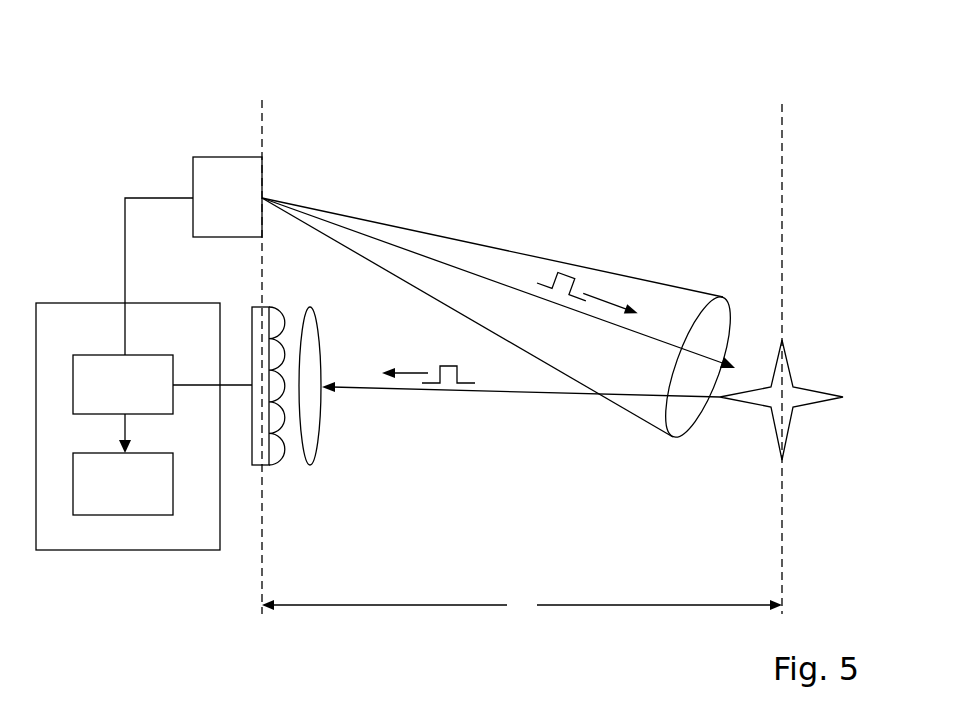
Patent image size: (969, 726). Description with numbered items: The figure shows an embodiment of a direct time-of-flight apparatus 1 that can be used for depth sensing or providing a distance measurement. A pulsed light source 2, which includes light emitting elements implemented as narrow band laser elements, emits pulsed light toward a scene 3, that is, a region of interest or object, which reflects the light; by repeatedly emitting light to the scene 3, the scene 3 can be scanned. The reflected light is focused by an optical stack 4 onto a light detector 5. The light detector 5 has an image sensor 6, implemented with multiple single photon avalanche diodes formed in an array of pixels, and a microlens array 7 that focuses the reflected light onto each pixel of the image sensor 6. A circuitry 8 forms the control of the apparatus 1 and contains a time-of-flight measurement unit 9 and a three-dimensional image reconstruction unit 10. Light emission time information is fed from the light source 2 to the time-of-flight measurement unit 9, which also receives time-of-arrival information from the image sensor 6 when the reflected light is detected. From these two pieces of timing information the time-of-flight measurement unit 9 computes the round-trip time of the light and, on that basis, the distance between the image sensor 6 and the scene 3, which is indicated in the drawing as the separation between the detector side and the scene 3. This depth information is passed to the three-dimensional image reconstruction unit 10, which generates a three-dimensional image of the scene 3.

The direct time-of-flight apparatus 1 is at (380, 70).
The pulsed light source 2 is at (227, 197).
The scene 3 is at (832, 426).
The optical stack 4 is at (334, 430).
The light detector 5 is at (323, 411).
The image sensor 6 is at (255, 467).
The microlens array 7 is at (277, 311).
The circuitry 8 is at (56, 303).
The time-of-flight measurement unit 9 is at (123, 384).
The 3D image reconstruction unit 10 is at (123, 484).